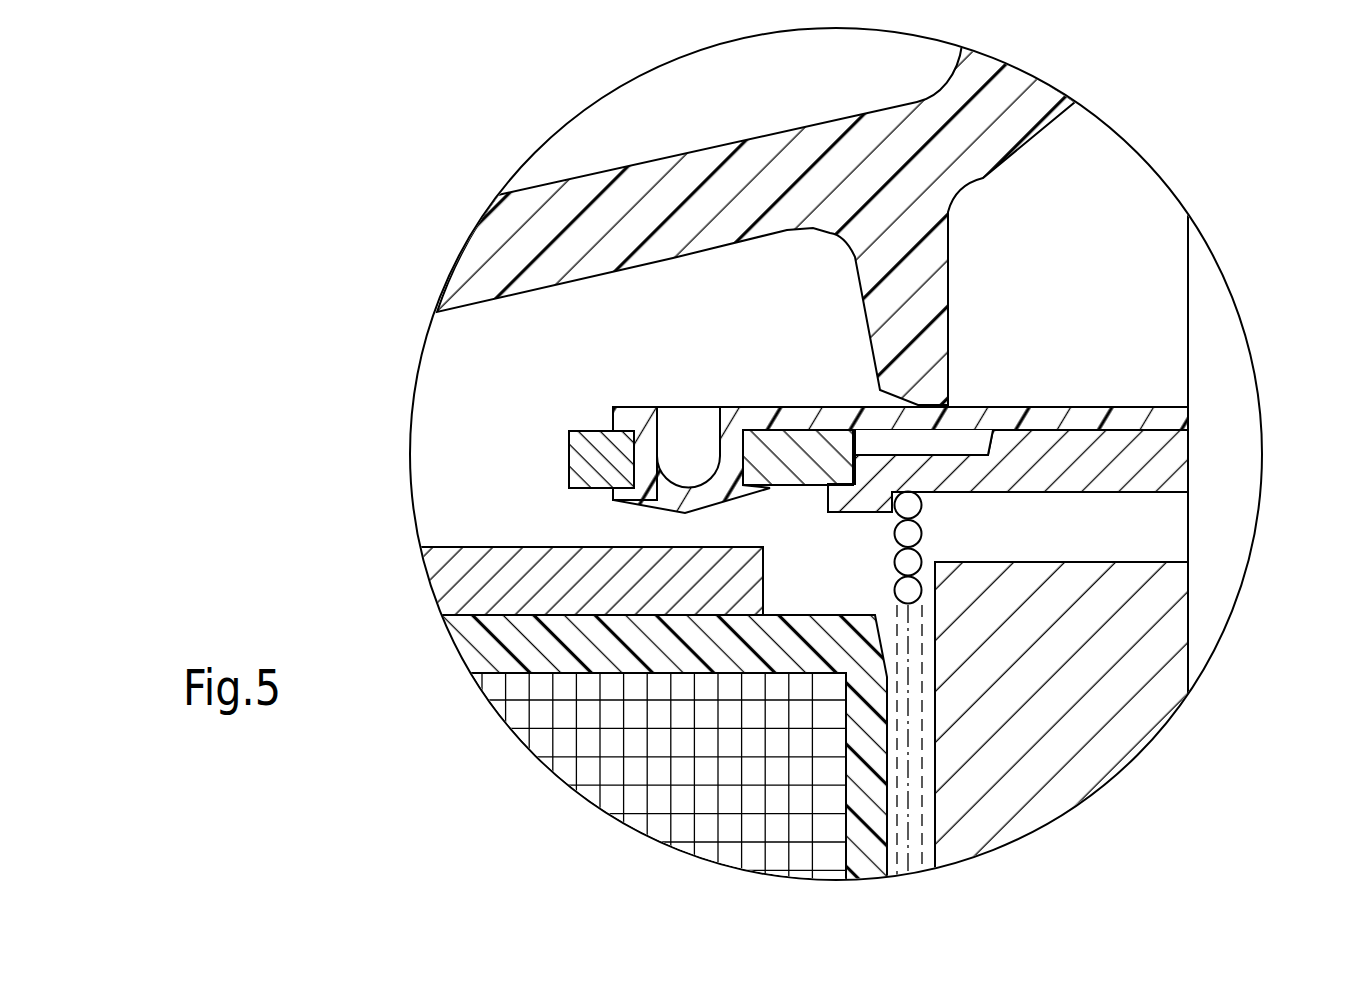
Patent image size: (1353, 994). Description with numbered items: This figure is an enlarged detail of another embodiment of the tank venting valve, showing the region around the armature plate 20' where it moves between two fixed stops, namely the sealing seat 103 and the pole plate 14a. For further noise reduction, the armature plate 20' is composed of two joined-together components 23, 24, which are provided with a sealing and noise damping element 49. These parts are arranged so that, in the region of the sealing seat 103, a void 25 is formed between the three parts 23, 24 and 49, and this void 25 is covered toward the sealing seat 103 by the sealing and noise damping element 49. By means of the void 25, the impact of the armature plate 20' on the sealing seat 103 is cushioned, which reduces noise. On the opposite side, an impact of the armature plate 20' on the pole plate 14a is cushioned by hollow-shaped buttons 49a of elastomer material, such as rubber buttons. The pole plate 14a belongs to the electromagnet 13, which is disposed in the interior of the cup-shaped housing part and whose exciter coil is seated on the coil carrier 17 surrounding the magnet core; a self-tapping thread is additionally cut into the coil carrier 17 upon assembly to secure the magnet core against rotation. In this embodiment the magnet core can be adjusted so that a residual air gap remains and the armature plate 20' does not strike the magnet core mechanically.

The electromagnet 13 is at (595, 728).
The pole plate 14a is at (490, 580).
The coil carrier 17 is at (513, 643).
The armature plate component 23 is at (607, 452).
The armature plate component 24 is at (1090, 467).
The void 25 is at (943, 448).
The sealing and noise damping element 49 is at (760, 412).
The hollow-shaped buttons 49a is at (632, 417).
The sealing seat 103 is at (935, 406).
The armature plate 20' is at (837, 225).